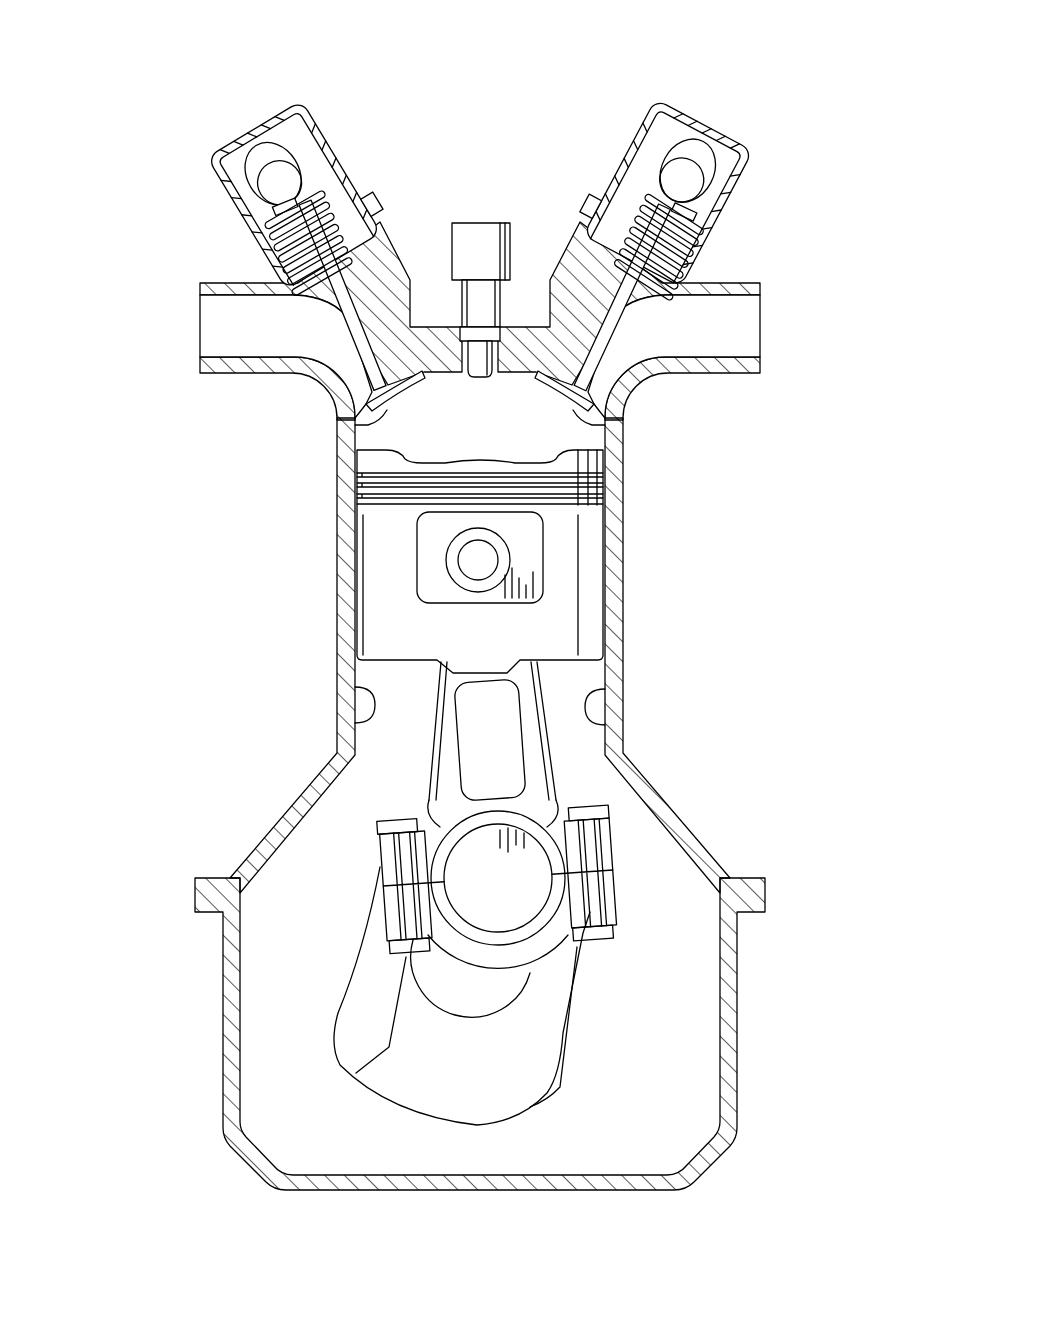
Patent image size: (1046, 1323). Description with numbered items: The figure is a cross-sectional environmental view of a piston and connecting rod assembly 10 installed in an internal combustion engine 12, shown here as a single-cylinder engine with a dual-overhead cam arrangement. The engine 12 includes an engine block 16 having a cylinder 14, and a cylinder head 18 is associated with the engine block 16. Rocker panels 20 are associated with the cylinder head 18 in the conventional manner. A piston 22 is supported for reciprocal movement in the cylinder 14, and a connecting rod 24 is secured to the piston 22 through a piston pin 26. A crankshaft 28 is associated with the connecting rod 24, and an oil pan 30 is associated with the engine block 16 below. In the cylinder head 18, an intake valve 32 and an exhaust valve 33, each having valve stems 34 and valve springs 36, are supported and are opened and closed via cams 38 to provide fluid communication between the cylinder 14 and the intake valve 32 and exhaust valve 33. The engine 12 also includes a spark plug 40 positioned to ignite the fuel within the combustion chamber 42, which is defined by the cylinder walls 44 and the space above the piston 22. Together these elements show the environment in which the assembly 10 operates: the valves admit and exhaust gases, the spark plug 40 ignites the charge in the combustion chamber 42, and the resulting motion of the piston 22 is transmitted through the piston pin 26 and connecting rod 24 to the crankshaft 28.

The piston and connecting rod assembly 10 is at (383, 730).
The internal combustion engine 12 is at (124, 309).
The cylinder 14 is at (570, 750).
The engine block 16 is at (347, 668).
The cylinder head 18 is at (756, 252).
The rocker panels 20 is at (280, 116).
The piston 22 is at (568, 675).
The connecting rod 24 is at (575, 788).
The piston pin 26 is at (480, 560).
The crankshaft 28 is at (522, 892).
The oil pan 30 is at (738, 1062).
The intake valve 32 is at (352, 425).
The exhaust valve 33 is at (595, 418).
The valve stems 34 is at (332, 340).
The valve springs 36 is at (253, 252).
The cams 38 is at (270, 155).
The spark plug 40 is at (479, 222).
The combustion chamber 42 is at (562, 437).
The cylinder walls 44 is at (375, 719).